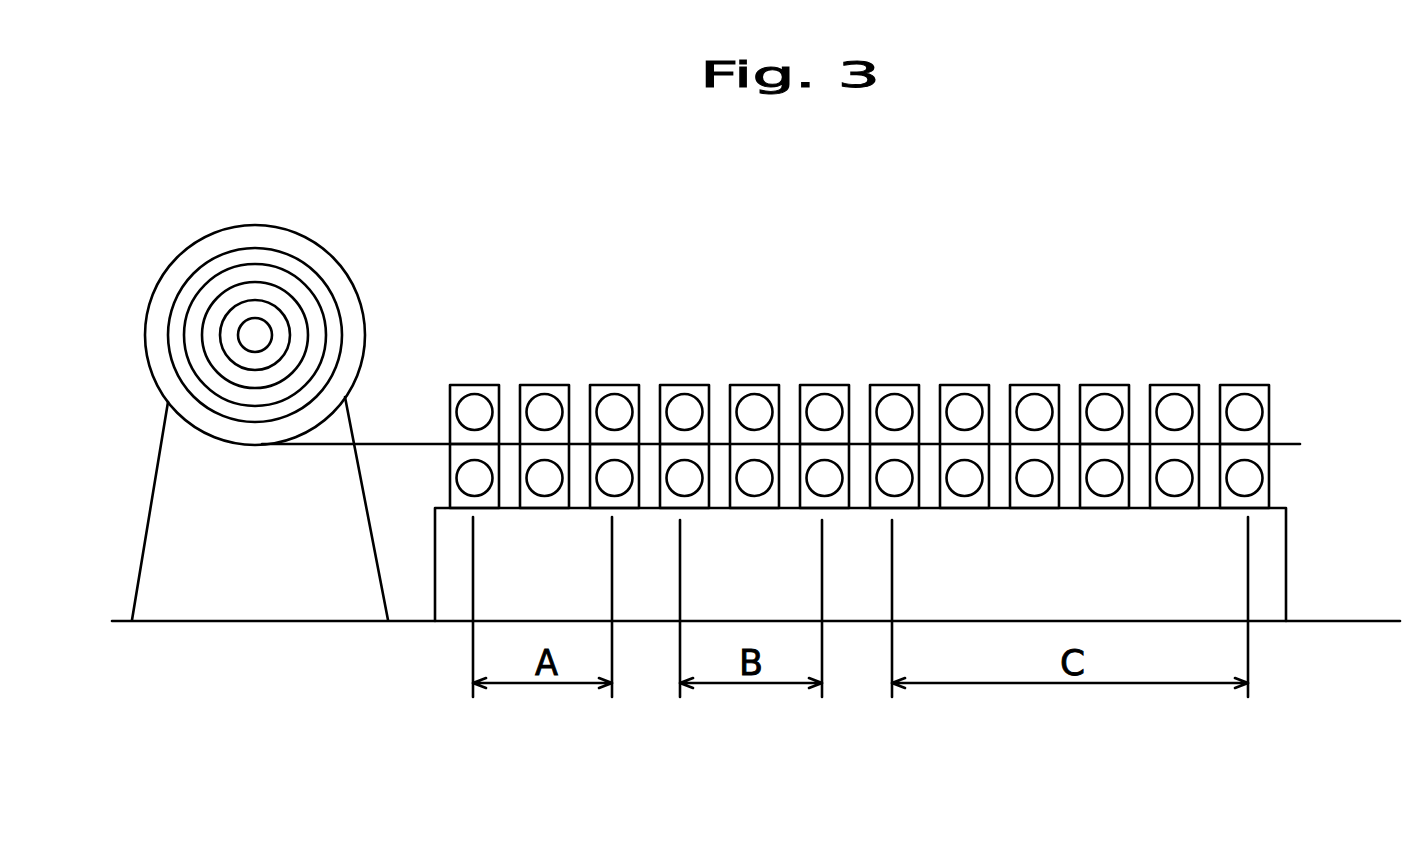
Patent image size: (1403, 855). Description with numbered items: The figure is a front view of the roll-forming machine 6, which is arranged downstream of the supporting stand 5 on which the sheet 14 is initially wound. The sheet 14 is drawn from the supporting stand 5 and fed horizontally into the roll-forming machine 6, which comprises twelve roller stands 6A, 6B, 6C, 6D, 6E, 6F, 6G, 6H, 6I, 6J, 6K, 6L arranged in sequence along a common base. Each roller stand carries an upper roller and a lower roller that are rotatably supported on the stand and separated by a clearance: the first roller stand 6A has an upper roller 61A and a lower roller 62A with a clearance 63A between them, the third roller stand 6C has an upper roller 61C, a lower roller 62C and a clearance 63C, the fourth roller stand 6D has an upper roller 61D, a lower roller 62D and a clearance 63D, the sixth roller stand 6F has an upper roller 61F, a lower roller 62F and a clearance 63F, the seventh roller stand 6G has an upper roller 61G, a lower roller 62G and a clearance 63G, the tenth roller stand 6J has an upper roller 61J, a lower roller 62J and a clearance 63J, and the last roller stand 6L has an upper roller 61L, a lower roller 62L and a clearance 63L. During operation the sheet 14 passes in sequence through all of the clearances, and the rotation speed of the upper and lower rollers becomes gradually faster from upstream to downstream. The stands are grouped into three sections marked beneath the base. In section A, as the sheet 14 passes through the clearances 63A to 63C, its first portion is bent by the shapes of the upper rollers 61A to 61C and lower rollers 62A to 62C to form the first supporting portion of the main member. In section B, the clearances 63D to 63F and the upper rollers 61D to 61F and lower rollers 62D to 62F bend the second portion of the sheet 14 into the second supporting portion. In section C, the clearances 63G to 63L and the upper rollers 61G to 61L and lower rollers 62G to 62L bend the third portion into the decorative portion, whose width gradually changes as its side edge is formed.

The supporting stand 5 is at (170, 465).
The sheet 14 is at (388, 444).
The roll-forming machine 6 is at (1273, 558).
The roller stand 6A is at (463, 362).
The roller stand 6B is at (549, 370).
The roller stand 6C is at (629, 370).
The roller stand 6D is at (697, 370).
The roller stand 6E is at (774, 370).
The roller stand 6F is at (839, 370).
The roller stand 6G is at (911, 370).
The roller stand 6H is at (982, 368).
The roller stand 6I is at (1043, 370).
The roller stand 6J is at (1109, 370).
The roller stand 6K is at (1187, 370).
The roller stand 6L is at (1262, 368).
The upper roller 61A is at (465, 416).
The upper roller 61C is at (607, 405).
The upper roller 61D is at (693, 405).
The upper roller 61F is at (833, 410).
The upper roller 61G is at (903, 410).
The upper roller 61J is at (1110, 408).
The upper roller 61L is at (1255, 410).
The lower roller 62A is at (473, 484).
The lower roller 62C is at (610, 487).
The lower roller 62D is at (686, 486).
The lower roller 62F is at (827, 487).
The lower roller 62G is at (897, 487).
The lower roller 62J is at (1102, 487).
The lower roller 62L is at (1255, 479).
The clearance 63A is at (455, 452).
The clearance 63C is at (622, 456).
The clearance 63D is at (695, 457).
The clearance 63F is at (838, 455).
The clearance 63G is at (907, 456).
The clearance 63J is at (1113, 454).
The clearance 63L is at (1260, 452).